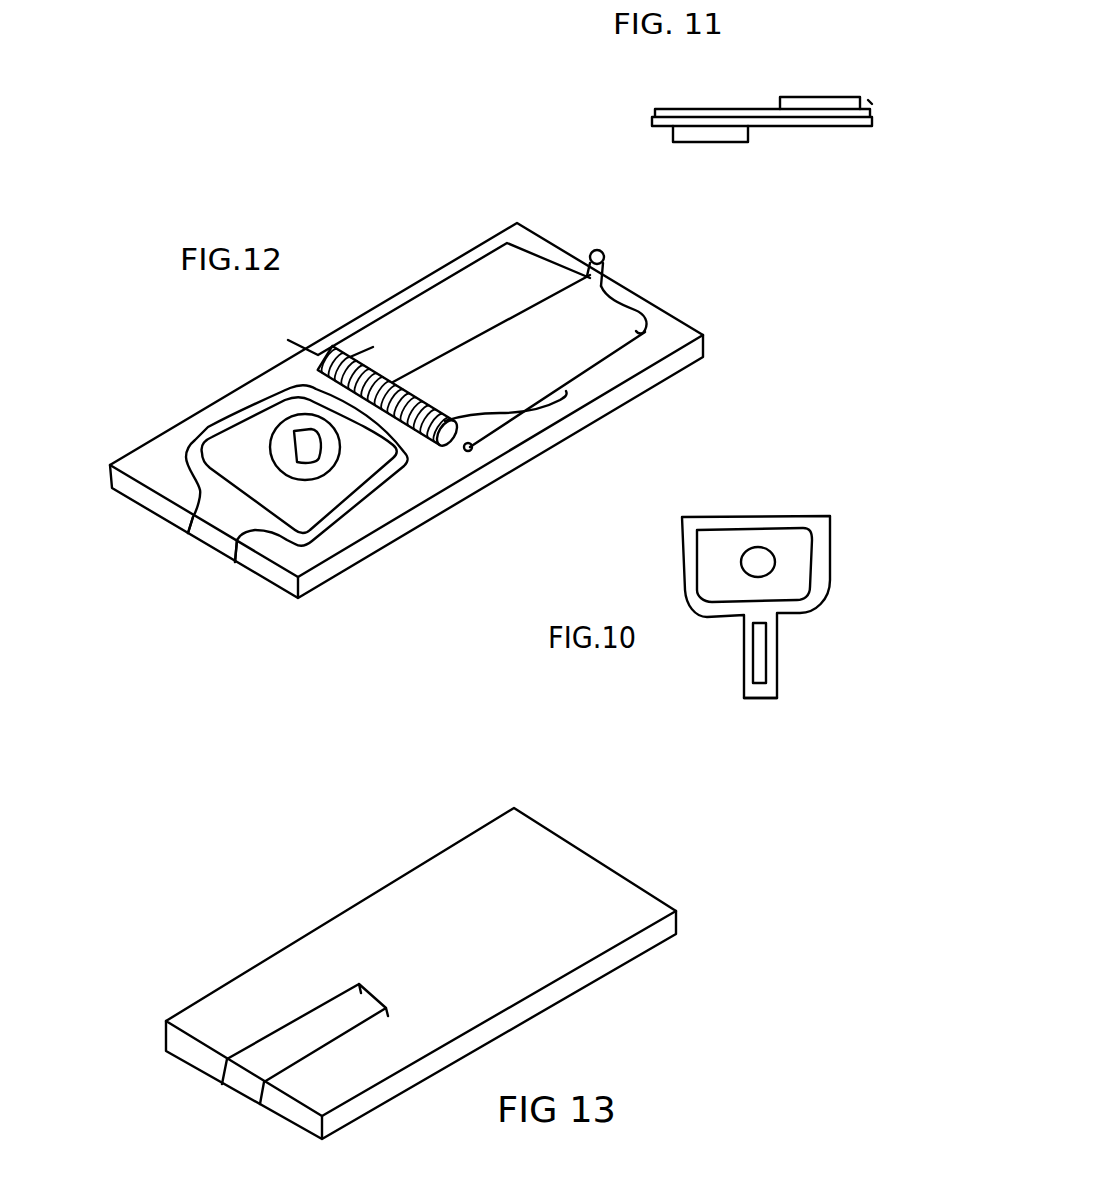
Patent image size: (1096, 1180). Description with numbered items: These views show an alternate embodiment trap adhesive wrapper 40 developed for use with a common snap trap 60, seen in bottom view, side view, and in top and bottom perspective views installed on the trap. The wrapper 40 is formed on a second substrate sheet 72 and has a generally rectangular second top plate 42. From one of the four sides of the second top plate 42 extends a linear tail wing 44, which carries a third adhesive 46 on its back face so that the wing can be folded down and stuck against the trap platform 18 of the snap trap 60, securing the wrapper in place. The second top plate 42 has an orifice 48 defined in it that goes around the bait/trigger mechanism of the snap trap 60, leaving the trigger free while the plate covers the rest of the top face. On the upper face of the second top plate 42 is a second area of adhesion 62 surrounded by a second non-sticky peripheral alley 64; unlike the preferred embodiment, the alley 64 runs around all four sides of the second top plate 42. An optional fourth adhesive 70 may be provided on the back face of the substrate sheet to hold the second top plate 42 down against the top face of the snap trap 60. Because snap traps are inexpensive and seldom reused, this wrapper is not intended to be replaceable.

In FIG. 13, the trap platform 18 is at (622, 897).
In FIG. 11, the alternate embodiment trap adhesive wrapper 40 is at (800, 117).
In FIG. 10, the alternate embodiment trap adhesive wrapper 40 is at (830, 548).
In FIG. 11, the second top plate 42 is at (845, 90).
In FIG. 12, the tail wing 44 is at (228, 553).
In FIG. 10, the tail wing 44 is at (780, 697).
In FIG. 13, the tail wing 44 is at (273, 1047).
In FIG. 11, the third adhesive 46 is at (718, 142).
In FIG. 10, the third adhesive 46 is at (763, 655).
In FIG. 12, the orifice 48 is at (287, 433).
In FIG. 10, the orifice 48 is at (755, 558).
In FIG. 12, the snap trap 60 is at (570, 427).
In FIG. 12, the second area of adhesion 62 is at (217, 457).
In FIG. 12, the second non-sticky peripheral alley 64 is at (402, 468).
In FIG. 12, the fourth adhesive 70 is at (299, 465).
In FIG. 10, the fourth adhesive 70 is at (717, 585).
In FIG. 11, the second substrate sheet 72 is at (702, 108).